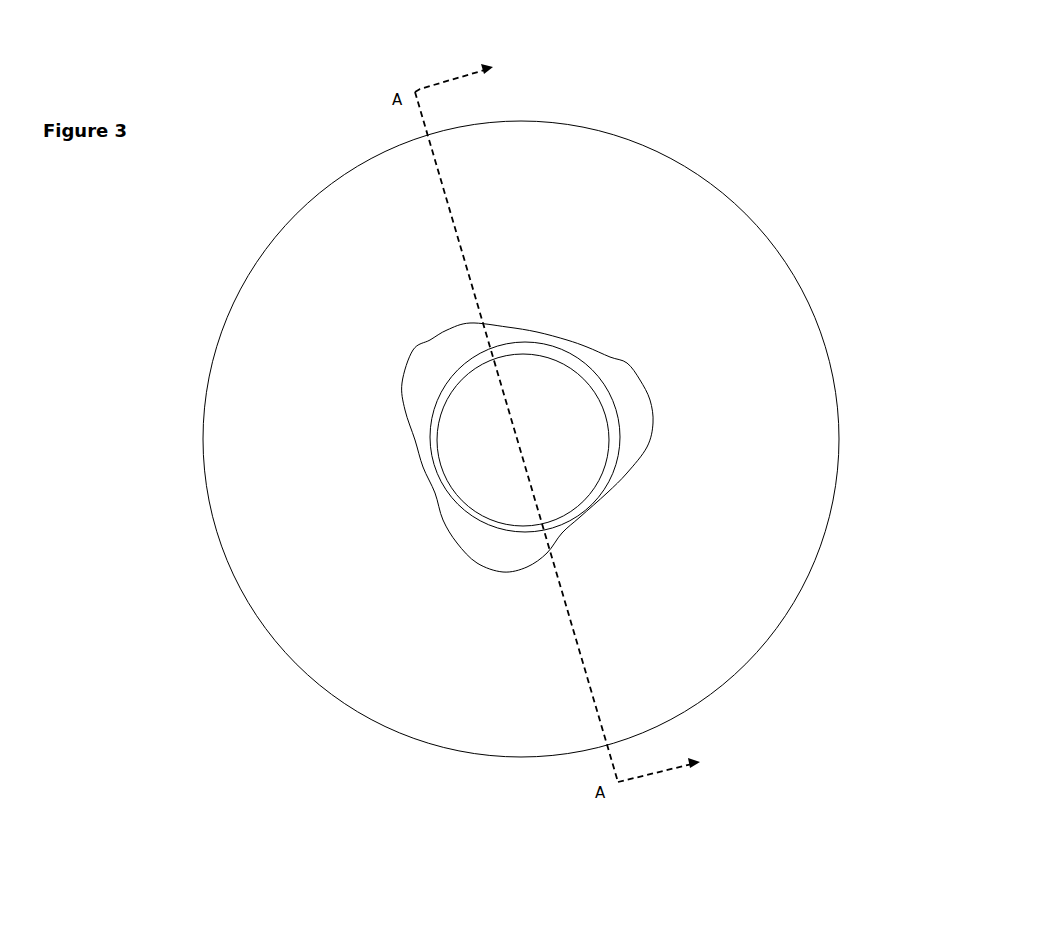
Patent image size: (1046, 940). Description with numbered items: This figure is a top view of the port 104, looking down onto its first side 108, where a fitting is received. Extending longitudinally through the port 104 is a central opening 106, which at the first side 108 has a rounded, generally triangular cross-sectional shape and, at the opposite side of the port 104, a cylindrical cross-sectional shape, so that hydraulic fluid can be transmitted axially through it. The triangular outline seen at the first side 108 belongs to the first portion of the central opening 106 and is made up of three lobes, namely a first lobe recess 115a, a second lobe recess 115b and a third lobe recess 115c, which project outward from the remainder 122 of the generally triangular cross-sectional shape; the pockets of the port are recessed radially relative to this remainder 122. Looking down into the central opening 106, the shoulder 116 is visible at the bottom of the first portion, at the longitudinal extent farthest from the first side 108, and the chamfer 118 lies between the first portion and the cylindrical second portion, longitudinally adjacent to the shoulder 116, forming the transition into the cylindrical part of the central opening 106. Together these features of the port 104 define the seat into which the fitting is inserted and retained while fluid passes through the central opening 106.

The port 104 is at (880, 217).
The central opening 106 is at (434, 507).
The first side 108 is at (464, 684).
The first lobe recess 115a is at (655, 403).
The second lobe recess 115b is at (442, 325).
The third lobe recess 115c is at (507, 573).
The shoulder 116 is at (512, 560).
The chamfer 118 is at (437, 463).
The remainder 122 is at (437, 360).